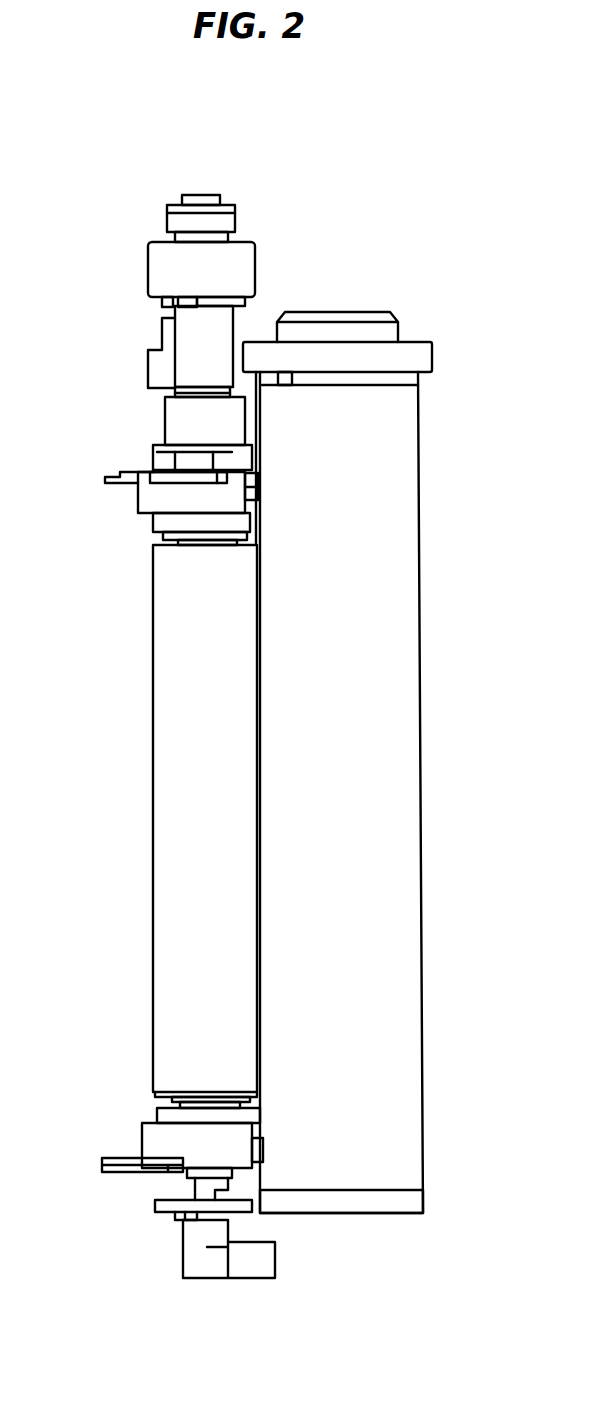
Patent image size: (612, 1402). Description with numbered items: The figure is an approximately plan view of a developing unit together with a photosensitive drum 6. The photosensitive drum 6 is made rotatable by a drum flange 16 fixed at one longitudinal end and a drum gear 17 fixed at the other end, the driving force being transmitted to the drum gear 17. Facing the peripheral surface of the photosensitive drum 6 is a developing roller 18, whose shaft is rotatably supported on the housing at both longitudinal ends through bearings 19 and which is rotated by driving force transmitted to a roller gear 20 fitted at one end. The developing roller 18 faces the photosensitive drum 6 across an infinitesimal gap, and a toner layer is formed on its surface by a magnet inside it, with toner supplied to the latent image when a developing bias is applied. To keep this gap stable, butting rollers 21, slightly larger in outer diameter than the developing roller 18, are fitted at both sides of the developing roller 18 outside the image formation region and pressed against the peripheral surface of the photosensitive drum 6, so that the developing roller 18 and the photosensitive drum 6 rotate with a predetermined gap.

The photosensitive drum 6 is at (400, 589).
The drum flange 16 is at (415, 1201).
The drum gear 17 is at (435, 357).
The developing roller 18 is at (182, 715).
The bearings 19 is at (158, 523).
The roller gear 20 is at (243, 266).
The butting rollers 21 is at (263, 482).